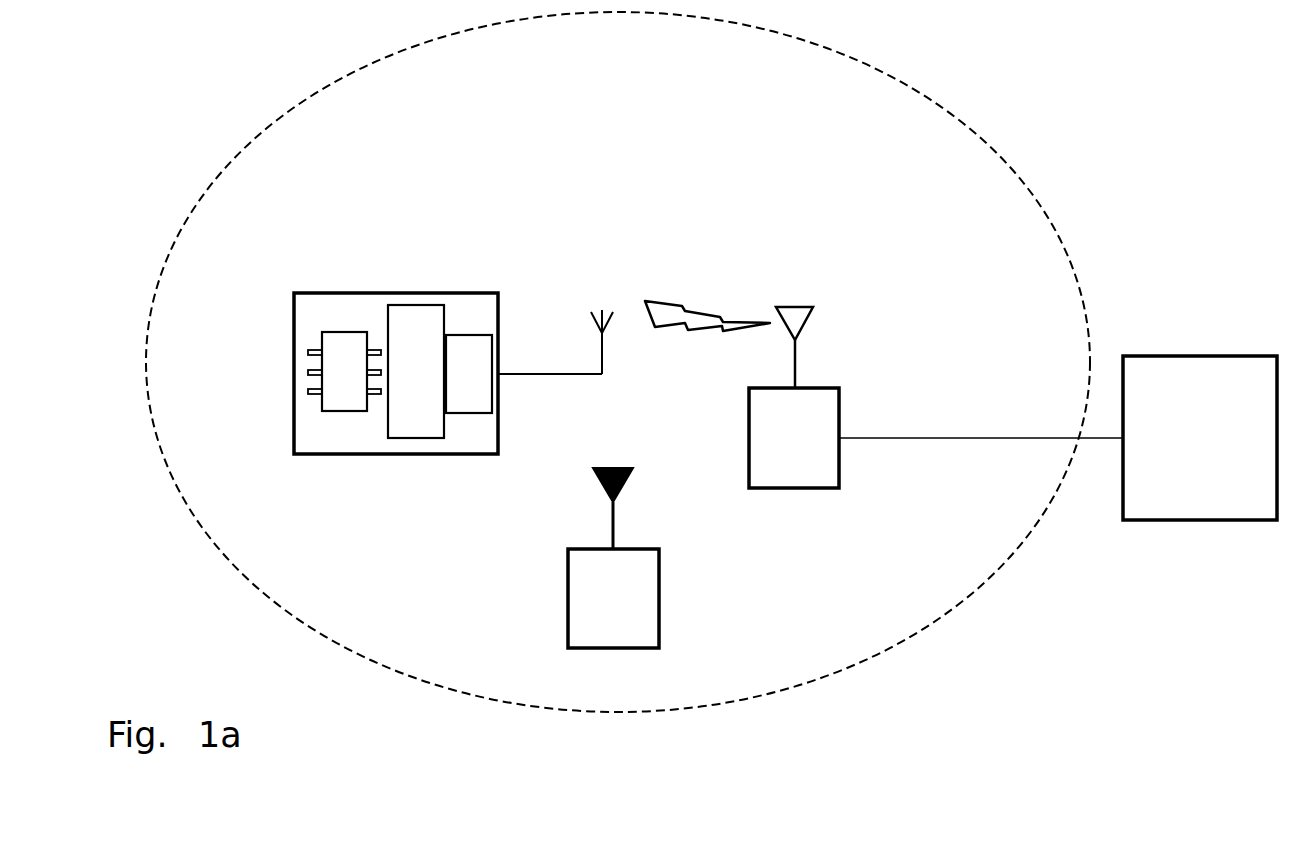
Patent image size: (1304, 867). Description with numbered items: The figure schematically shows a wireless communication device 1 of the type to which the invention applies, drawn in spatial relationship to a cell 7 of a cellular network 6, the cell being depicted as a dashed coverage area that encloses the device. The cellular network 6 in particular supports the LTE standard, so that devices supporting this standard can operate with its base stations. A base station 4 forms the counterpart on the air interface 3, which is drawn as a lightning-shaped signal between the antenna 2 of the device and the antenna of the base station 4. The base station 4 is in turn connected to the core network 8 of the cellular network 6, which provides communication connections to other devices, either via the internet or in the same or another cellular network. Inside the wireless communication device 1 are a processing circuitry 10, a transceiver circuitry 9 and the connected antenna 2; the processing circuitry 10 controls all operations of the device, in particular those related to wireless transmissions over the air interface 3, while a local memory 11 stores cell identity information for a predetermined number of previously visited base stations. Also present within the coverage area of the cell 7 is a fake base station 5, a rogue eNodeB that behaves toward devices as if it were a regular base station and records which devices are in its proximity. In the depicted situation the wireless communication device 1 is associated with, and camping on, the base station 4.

The wireless communication device 1 is at (396, 373).
The antenna 2 is at (555, 321).
The air interface 3 is at (707, 294).
The base station 4 is at (936, 397).
The fake base station 5 is at (613, 558).
The cellular network 6 is at (1076, 89).
The cell 7 is at (618, 362).
The core network 8 is at (1200, 438).
The transceiver circuitry 9 is at (469, 374).
The processing circuitry 10 is at (416, 371).
The local memory 11 is at (344, 371).